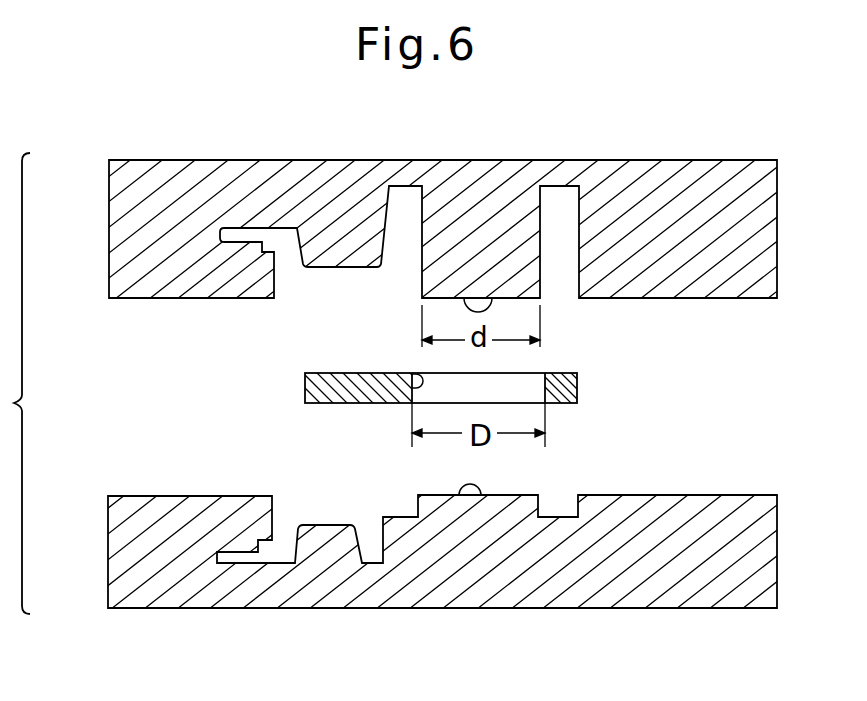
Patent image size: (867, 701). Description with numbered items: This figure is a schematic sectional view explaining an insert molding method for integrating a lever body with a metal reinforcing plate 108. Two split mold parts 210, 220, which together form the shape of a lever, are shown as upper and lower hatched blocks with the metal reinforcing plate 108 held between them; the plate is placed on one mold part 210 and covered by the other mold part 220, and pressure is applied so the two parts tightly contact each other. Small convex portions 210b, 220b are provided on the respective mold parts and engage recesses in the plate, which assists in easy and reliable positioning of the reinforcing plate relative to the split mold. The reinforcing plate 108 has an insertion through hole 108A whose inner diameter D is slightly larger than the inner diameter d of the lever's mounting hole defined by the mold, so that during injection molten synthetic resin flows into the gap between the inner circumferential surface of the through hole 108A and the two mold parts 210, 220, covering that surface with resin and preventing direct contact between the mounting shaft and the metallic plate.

The mold part 220 is at (690, 202).
The convex portion 220b is at (493, 297).
The metal reinforcing plate 108 is at (575, 385).
The through hole 108A is at (418, 377).
The mold part 210 is at (658, 558).
The convex portion 210b is at (480, 494).